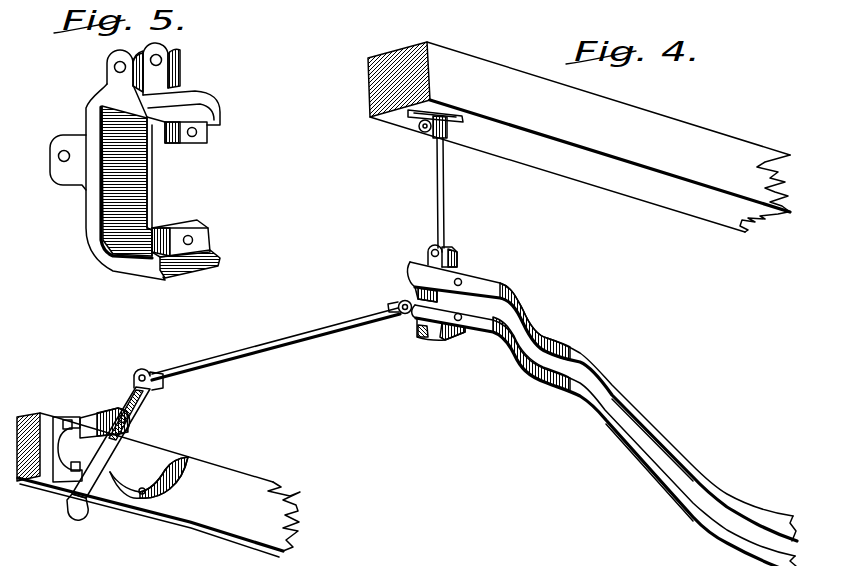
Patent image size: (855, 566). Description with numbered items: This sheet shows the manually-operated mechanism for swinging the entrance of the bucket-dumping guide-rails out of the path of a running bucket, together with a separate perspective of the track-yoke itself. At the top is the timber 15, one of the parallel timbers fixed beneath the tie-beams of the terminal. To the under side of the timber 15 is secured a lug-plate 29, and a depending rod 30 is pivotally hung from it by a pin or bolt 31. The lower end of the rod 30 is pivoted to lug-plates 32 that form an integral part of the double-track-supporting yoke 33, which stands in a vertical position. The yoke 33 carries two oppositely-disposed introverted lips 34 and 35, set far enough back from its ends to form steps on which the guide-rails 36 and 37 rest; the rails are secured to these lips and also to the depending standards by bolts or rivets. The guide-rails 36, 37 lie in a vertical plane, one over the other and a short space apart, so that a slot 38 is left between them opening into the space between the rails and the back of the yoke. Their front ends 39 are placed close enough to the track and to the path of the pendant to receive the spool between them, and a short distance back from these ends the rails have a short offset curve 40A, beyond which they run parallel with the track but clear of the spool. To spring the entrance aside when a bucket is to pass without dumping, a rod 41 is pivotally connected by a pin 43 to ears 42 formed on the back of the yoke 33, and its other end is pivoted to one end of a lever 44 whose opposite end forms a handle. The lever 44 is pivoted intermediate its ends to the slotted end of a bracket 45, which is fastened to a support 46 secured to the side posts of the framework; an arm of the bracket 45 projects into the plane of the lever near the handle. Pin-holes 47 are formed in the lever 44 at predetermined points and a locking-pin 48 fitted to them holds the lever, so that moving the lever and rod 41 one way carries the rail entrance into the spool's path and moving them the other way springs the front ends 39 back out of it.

In FIG. 4, the timber 15 is at (553, 160).
In FIG. 4, the lug-plate 29 is at (422, 122).
In FIG. 4, the depending rod 30 is at (447, 197).
In FIG. 4, the pin or bolt 31 is at (427, 136).
In FIG. 5, the lug-plates 32 is at (180, 60).
In FIG. 4, the lug-plates 32 is at (426, 254).
In FIG. 5, the double-track-supporting yoke 33 is at (133, 187).
In FIG. 4, the double-track-supporting yoke 33 is at (417, 333).
In FIG. 5, the introverted lip 34 is at (207, 128).
In FIG. 5, the introverted lip 35 is at (207, 233).
In FIG. 4, the guide-rail 36 is at (598, 367).
In FIG. 4, the guide-rail 37 is at (602, 410).
In FIG. 4, the slot 38 is at (655, 448).
In FIG. 4, the front ends of guide-rails 39 is at (475, 303).
In FIG. 4, the offset curve 40A is at (540, 327).
In FIG. 4, the rod 41 is at (303, 350).
In FIG. 5, the ears 42 is at (70, 172).
In FIG. 4, the ears 42 is at (403, 300).
In FIG. 4, the pin 43 is at (394, 304).
In FIG. 4, the lever 44 is at (167, 393).
In FIG. 4, the bracket 45 is at (88, 420).
In FIG. 4, the support 46 is at (205, 480).
In FIG. 4, the pin-holes 47 is at (142, 496).
In FIG. 4, the locking-pin 48 is at (107, 500).